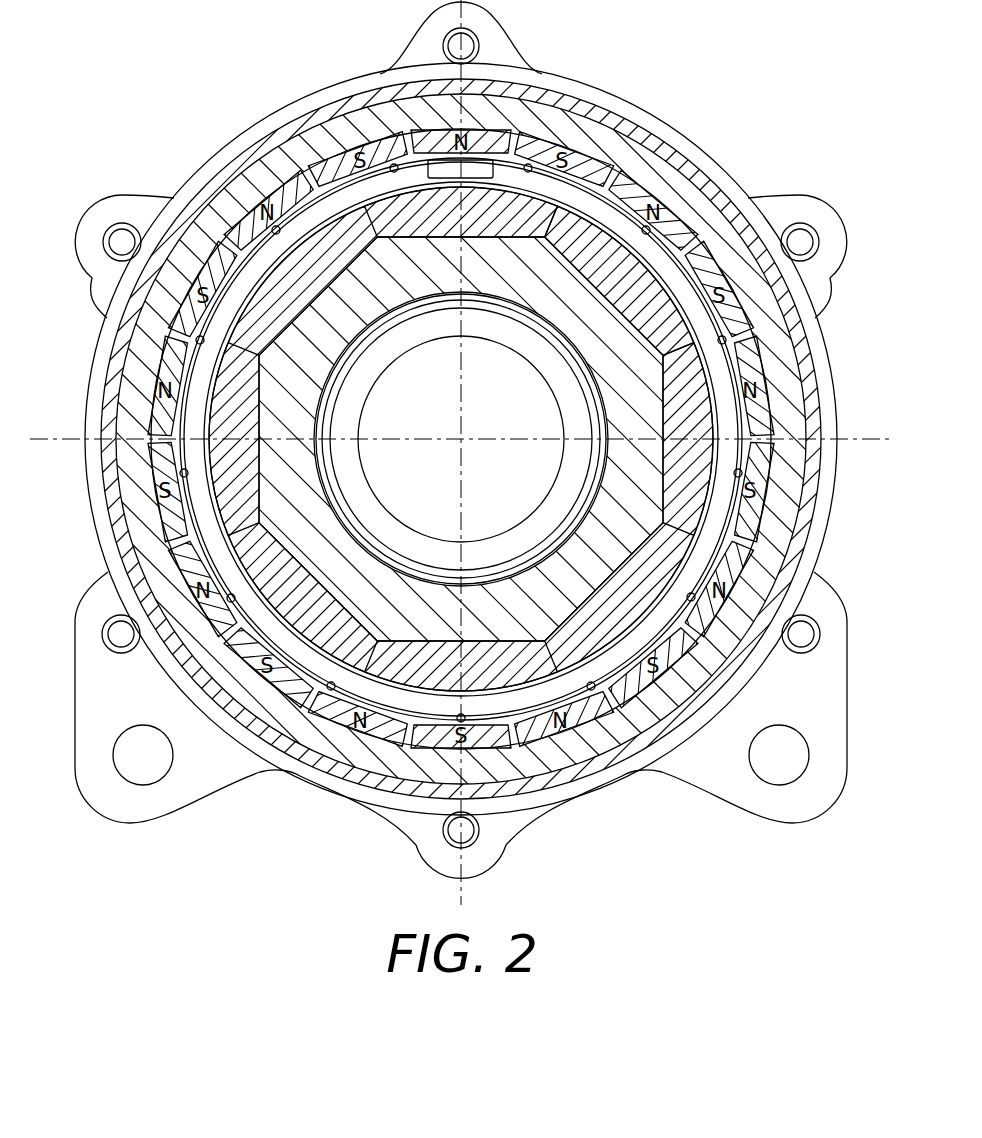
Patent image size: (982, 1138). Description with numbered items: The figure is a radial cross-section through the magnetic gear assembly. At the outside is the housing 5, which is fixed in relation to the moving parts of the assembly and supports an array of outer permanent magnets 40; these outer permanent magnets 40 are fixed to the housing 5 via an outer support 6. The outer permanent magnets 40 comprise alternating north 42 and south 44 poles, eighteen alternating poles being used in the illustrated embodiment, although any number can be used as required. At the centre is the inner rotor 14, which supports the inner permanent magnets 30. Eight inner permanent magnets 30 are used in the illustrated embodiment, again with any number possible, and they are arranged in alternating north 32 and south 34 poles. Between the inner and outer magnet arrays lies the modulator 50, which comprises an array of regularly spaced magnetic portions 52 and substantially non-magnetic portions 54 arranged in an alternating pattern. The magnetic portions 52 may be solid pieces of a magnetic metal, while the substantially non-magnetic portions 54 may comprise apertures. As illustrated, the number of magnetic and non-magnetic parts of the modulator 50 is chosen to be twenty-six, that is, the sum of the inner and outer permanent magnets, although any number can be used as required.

The housing 5 is at (206, 203).
The outer support 6 is at (283, 168).
The inner rotor 14 is at (352, 322).
The inner permanent magnets 30 is at (262, 548).
The north pole 32 is at (545, 165).
The south pole 34 is at (597, 237).
The outer permanent magnets 40 is at (170, 520).
The north pole 42 is at (763, 417).
The south pole 44 is at (768, 463).
The modulator 50 is at (165, 455).
The magnetic portions 52 is at (715, 615).
The non-magnetic portions 54 is at (760, 518).